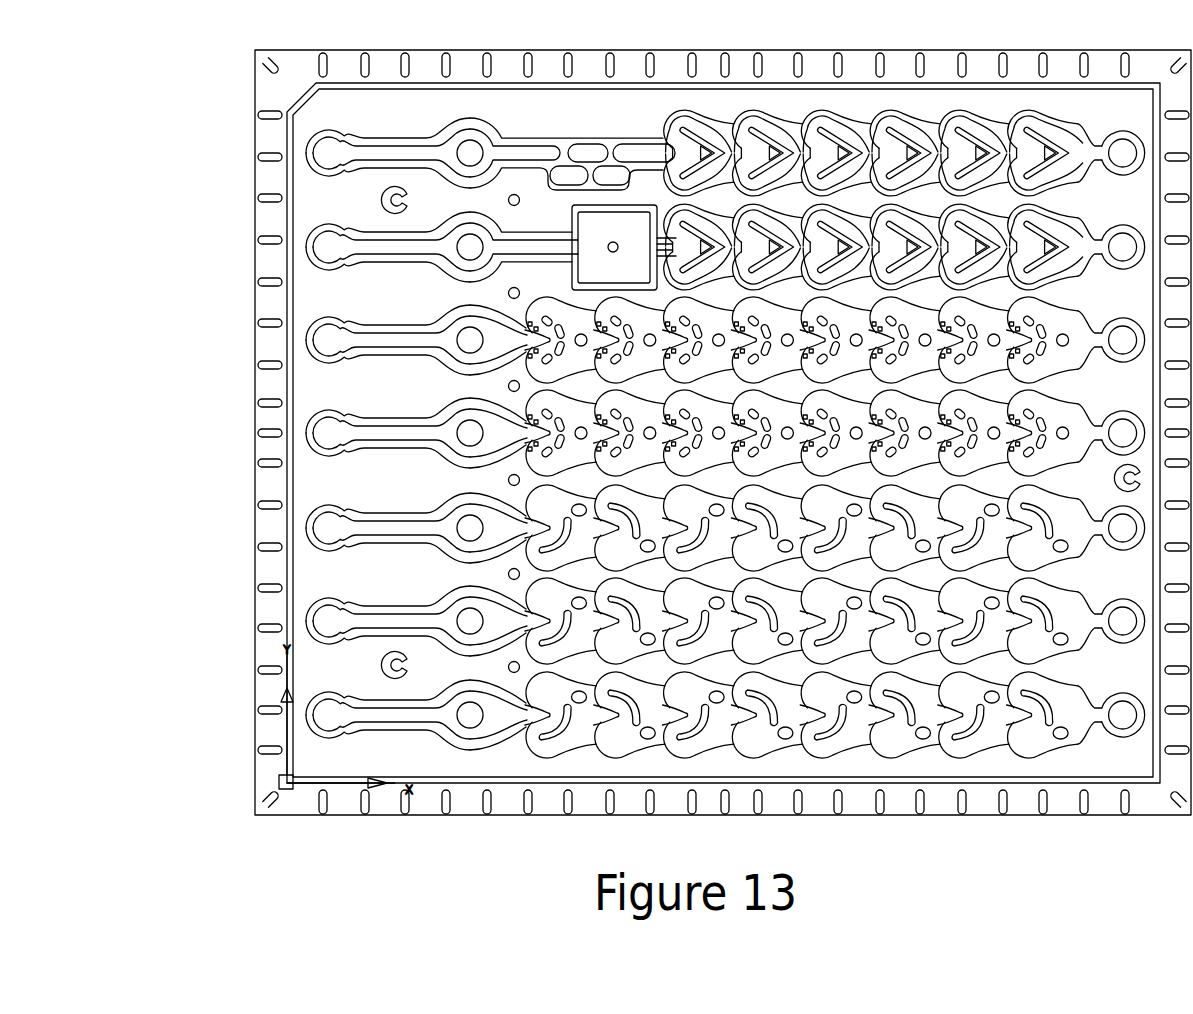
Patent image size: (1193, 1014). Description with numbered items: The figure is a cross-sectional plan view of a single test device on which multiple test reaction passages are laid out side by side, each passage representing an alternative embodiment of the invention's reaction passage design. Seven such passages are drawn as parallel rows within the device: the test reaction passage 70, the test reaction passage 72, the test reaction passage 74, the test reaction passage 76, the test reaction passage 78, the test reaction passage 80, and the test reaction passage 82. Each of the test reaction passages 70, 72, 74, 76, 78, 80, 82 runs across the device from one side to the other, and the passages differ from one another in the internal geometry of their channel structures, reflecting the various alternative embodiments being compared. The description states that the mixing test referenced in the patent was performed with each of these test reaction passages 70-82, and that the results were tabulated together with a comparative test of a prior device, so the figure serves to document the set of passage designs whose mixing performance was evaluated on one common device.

The test reaction passage 70 is at (328, 715).
The test reaction passage 72 is at (328, 621).
The test reaction passage 74 is at (328, 528).
The test reaction passage 76 is at (328, 433).
The test reaction passage 78 is at (328, 340).
The test reaction passage 80 is at (328, 247).
The test reaction passage 82 is at (328, 153).